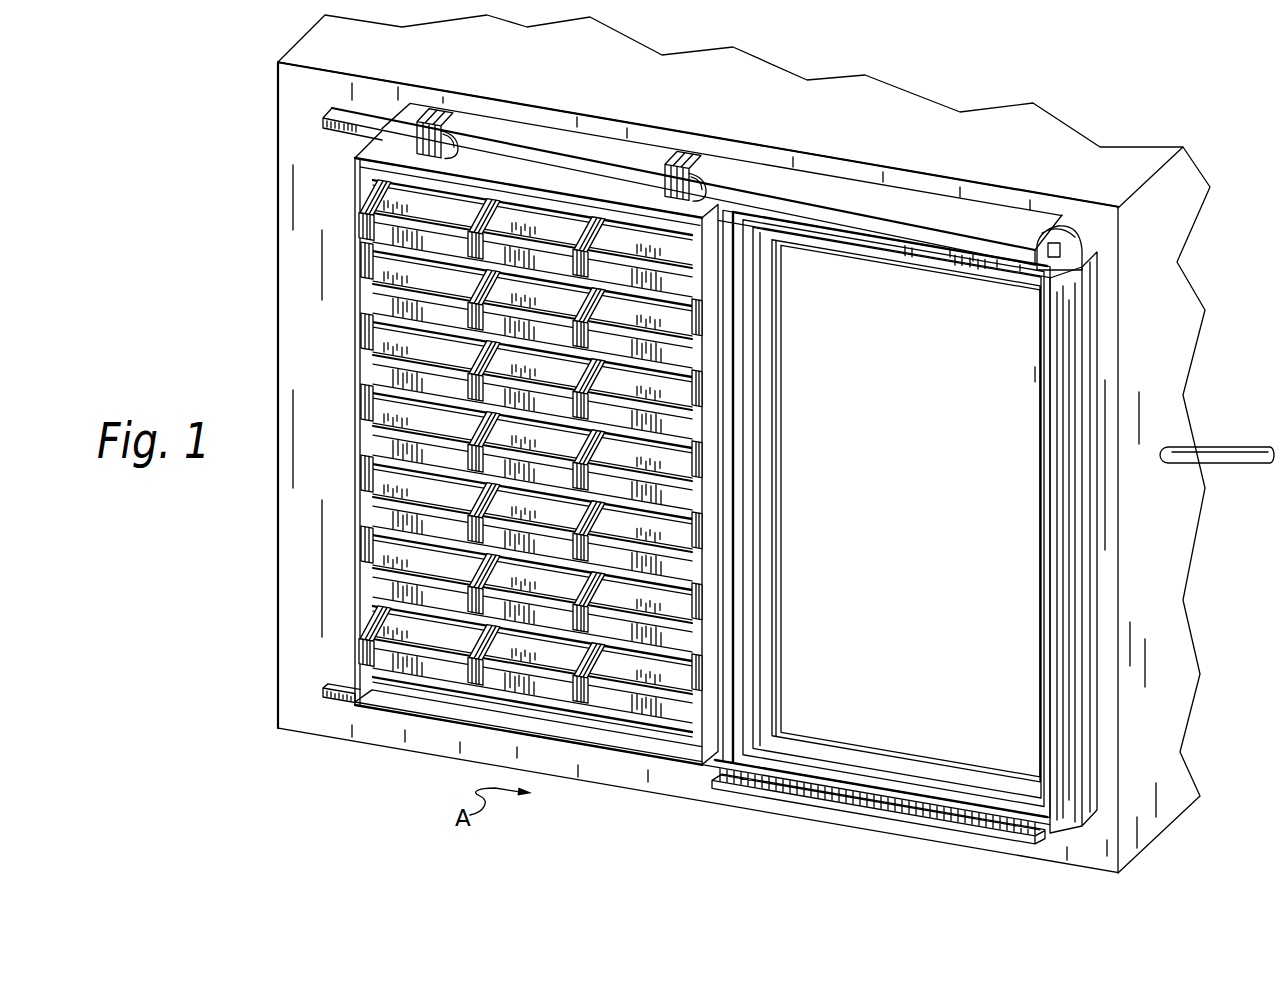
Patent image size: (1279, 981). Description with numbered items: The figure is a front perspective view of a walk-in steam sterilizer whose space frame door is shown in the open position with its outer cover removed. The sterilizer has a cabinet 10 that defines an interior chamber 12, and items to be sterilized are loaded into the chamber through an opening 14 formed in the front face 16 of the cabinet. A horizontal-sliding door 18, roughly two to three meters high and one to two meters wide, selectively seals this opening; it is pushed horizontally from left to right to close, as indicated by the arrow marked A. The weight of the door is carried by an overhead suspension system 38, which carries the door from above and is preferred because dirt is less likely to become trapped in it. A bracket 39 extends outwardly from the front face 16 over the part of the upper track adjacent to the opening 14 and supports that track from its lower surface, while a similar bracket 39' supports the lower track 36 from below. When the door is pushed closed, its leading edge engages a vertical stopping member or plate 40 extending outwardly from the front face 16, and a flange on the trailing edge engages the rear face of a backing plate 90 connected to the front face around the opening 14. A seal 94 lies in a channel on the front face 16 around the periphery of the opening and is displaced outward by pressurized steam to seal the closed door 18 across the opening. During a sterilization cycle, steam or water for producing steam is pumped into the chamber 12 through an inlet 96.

The cabinet 10 is at (792, 50).
The interior chamber 12 is at (926, 431).
The opening 14 is at (942, 714).
The front face 16 is at (1123, 742).
The horizontal-sliding door 18 is at (443, 679).
The lower track 36 is at (335, 702).
The suspension system 38 is at (651, 153).
The bracket 39 is at (692, 199).
The bracket 39' is at (878, 838).
The vertical stopping member or plate 40 is at (1078, 527).
The backing plate 90 is at (1080, 232).
The seal 94 is at (756, 585).
The inlet 96 is at (1213, 449).